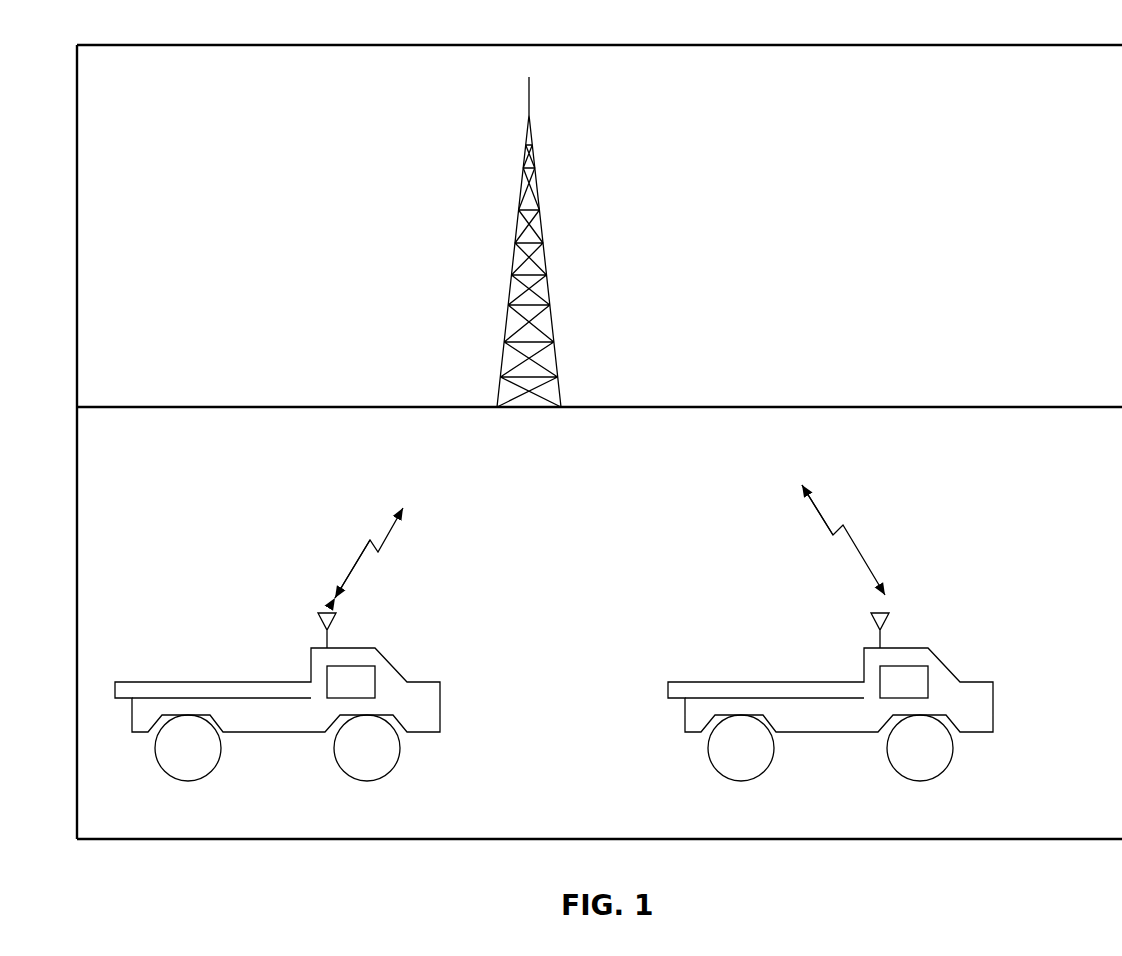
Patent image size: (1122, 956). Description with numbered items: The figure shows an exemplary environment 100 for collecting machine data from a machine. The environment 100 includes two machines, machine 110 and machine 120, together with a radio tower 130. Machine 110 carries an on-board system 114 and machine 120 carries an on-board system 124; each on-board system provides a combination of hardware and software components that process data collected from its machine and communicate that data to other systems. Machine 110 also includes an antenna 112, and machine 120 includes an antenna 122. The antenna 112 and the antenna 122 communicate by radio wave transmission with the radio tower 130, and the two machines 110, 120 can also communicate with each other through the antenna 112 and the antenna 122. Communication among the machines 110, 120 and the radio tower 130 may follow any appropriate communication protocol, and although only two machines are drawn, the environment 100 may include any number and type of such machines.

The environment 100 is at (1093, 74).
The machine 110 is at (213, 679).
The antenna 112 is at (317, 609).
The on-board system 114 is at (379, 679).
The machine 120 is at (766, 679).
The antenna 122 is at (870, 609).
The on-board system 124 is at (932, 679).
The radio tower 130 is at (548, 281).